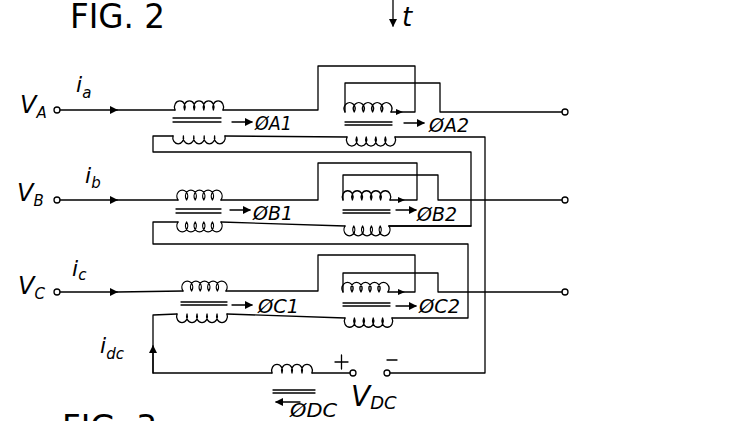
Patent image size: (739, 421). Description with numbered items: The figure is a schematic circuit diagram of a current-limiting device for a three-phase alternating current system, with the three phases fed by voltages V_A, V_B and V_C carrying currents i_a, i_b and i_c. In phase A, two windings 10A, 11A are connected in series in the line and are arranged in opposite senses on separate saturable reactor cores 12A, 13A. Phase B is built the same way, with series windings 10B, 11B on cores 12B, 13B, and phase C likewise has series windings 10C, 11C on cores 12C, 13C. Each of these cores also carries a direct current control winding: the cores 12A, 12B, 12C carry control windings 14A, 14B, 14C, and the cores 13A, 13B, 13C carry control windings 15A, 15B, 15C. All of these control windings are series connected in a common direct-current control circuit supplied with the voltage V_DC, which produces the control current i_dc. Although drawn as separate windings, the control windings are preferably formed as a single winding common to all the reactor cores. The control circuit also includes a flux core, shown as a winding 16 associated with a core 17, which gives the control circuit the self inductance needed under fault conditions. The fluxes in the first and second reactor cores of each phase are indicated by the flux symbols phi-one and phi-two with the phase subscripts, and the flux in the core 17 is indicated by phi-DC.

The winding 10A is at (208, 104).
The saturable reactor core 12A is at (224, 115).
The direct current control winding 14A is at (171, 131).
The winding 11A is at (396, 108).
The saturable reactor core 13A is at (410, 122).
The direct current control winding 15A is at (346, 132).
The winding 10B is at (180, 196).
The saturable reactor core 12B is at (198, 212).
The direct current control winding 14B is at (182, 227).
The winding 11B is at (372, 196).
The saturable reactor core 13B is at (345, 212).
The direct current control winding 15B is at (383, 230).
The winding 10C is at (189, 287).
The saturable reactor core 12C is at (208, 290).
The direct current control winding 14C is at (231, 307).
The winding 11C is at (356, 289).
The saturable reactor core 13C is at (345, 306).
The direct current control winding 15C is at (360, 325).
The winding 16 is at (283, 366).
The core 17 is at (273, 392).